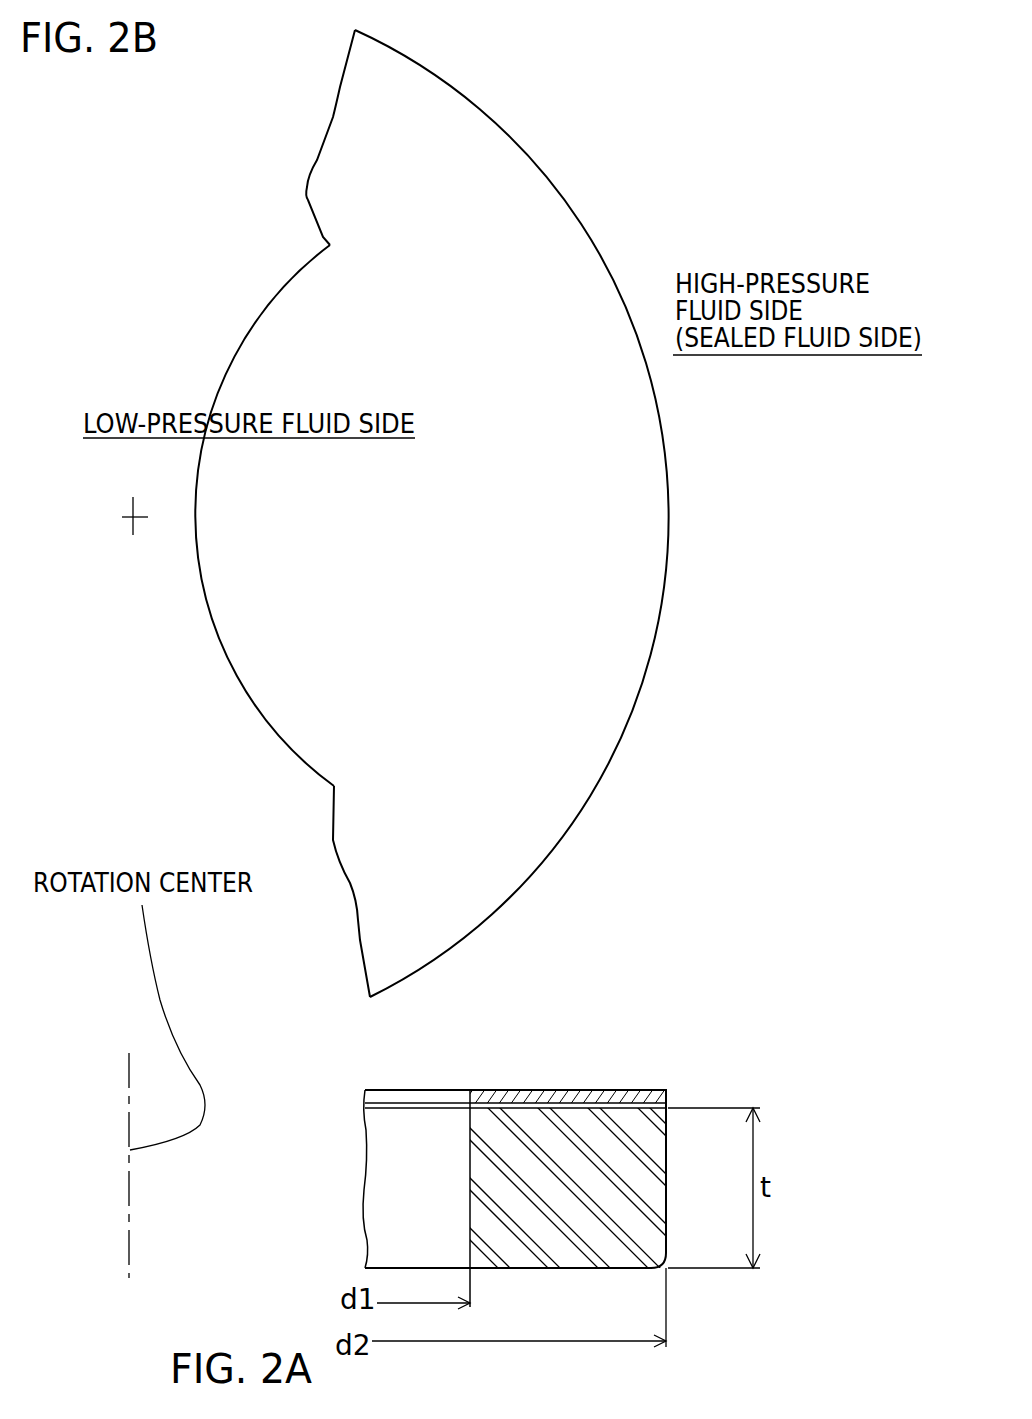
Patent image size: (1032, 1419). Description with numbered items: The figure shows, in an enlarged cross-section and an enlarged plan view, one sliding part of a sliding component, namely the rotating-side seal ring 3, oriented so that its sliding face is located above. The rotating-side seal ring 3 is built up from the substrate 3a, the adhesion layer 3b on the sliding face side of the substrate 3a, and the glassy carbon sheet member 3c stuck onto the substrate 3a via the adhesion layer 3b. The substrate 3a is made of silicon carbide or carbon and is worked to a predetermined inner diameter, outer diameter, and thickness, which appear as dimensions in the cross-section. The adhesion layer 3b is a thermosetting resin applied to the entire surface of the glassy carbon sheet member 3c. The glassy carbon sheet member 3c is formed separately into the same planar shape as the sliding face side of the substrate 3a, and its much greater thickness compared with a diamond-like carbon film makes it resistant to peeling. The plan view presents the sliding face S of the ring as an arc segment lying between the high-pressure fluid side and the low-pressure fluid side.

In FIG. 2B, the rotating-side seal ring 3 is at (671, 440).
In FIG. 2A, the rotating-side seal ring 3 is at (662, 1087).
In FIG. 2A, the substrate 3a is at (548, 1262).
In FIG. 2A, the adhesion layer 3b is at (669, 1105).
In FIG. 2B, the glassy carbon sheet member 3c is at (633, 533).
In FIG. 2A, the glassy carbon sheet member 3c is at (580, 1093).
In FIG. 2B, the sliding surface S is at (573, 595).
In FIG. 2A, the sliding surface S is at (518, 1089).